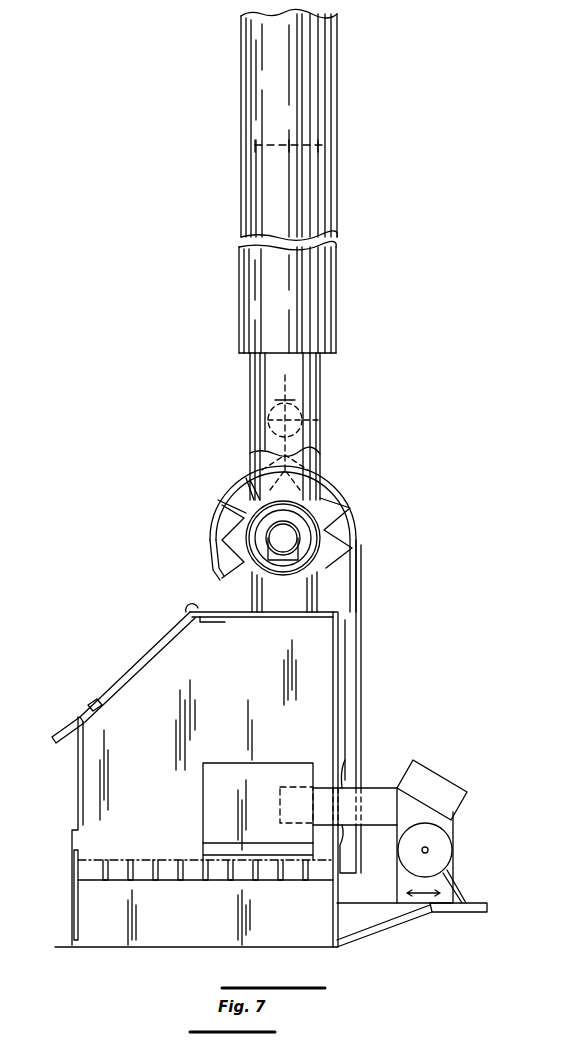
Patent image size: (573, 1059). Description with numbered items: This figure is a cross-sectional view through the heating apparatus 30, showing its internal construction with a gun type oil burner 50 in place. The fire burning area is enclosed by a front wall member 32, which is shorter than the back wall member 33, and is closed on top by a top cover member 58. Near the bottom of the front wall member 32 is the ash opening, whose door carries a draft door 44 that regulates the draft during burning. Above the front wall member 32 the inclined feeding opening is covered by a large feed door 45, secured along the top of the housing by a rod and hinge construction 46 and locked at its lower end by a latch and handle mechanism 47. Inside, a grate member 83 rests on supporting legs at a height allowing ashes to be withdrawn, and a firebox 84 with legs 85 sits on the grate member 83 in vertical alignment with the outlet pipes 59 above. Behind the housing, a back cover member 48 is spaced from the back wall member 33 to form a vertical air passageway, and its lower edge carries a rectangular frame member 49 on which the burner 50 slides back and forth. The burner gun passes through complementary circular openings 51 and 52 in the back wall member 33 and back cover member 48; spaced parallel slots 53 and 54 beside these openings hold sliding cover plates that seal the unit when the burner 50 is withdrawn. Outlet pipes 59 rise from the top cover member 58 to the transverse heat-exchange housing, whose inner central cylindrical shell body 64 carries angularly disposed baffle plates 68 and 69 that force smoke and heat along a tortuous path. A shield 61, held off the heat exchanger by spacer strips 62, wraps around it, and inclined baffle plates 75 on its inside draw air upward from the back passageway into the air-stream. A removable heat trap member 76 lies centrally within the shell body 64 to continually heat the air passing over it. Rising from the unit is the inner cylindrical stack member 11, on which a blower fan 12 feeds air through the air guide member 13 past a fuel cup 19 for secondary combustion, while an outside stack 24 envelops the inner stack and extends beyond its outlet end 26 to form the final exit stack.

The inner cylindrical stack member 11 is at (322, 390).
The blower fan 12 is at (318, 421).
The air guide member 13 is at (262, 415).
The fuel cup 19 is at (253, 388).
The outside stack 24 is at (238, 238).
The outlet end of inner stack member 26 is at (320, 140).
The heating apparatus 30 is at (188, 971).
The front wall member 32 is at (78, 790).
The back wall member 33 is at (339, 681).
The draft door 44 is at (112, 914).
The feed door 45 is at (143, 648).
The rod and hinge construction 46 is at (190, 604).
The latch and handle mechanism 47 is at (80, 706).
The back cover member 48 is at (360, 716).
The rectangular frame member 49 is at (450, 909).
The gun type oil burner 50 is at (437, 763).
The circular opening in back wall 51 is at (348, 760).
The circular opening in back cover 52 is at (358, 786).
The spaced parallel slots of back wall 53 is at (348, 858).
The spaced parallel slots of back cover 54 is at (356, 832).
The top cover member 58 is at (223, 619).
The outlet pipes 59 is at (252, 600).
The shield 61 is at (222, 503).
The spacer strips 62 is at (241, 527).
The inner central cylindrical shell body 64 is at (345, 500).
The baffle plate 68 is at (328, 552).
The baffle plate 69 is at (252, 481).
The inclined baffle plates 75 is at (362, 600).
The heat trap member 76 is at (263, 540).
The grate member 83 is at (140, 880).
The firebox 84 is at (203, 798).
The legs 85 is at (203, 848).